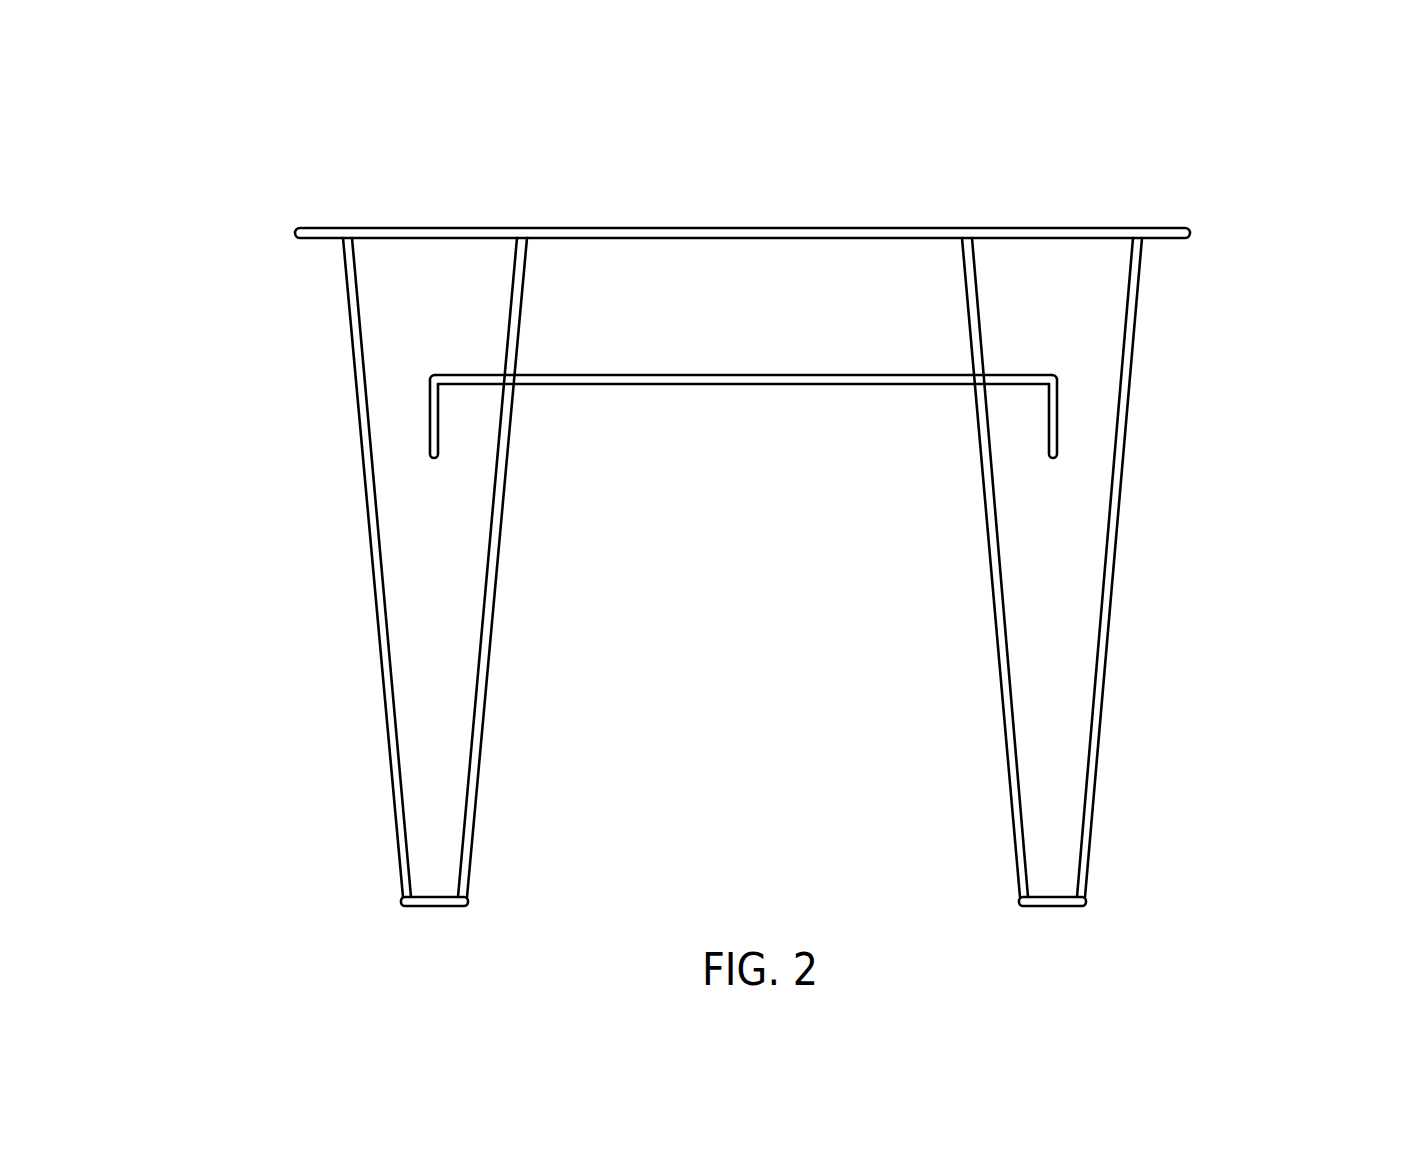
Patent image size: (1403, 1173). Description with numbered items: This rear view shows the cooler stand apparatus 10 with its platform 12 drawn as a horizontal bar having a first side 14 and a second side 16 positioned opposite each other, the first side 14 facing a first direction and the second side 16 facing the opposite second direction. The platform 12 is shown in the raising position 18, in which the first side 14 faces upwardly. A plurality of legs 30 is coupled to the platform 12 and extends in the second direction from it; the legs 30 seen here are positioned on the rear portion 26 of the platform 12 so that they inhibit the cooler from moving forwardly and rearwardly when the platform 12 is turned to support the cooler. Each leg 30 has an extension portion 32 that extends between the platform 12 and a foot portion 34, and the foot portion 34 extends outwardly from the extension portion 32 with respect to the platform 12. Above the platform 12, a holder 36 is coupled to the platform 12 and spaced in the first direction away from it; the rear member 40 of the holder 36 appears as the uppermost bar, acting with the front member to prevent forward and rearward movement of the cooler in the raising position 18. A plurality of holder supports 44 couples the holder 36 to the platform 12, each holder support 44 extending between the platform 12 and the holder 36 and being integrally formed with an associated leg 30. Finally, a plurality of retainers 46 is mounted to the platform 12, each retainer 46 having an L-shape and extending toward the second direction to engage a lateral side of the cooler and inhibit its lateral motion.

The cooler stand apparatus 10 is at (1150, 158).
The platform 12 is at (593, 413).
The first side 14 is at (720, 375).
The second side 16 is at (743, 384).
The raising position 18 is at (888, 413).
The rear portion 26 is at (868, 378).
The leg 30 is at (328, 657).
The extension portion 32 is at (480, 765).
The foot portion 34 is at (432, 906).
The holder 36 is at (1215, 213).
The rear member 40 is at (768, 228).
The holder support 44 is at (512, 313).
The retainer 46 is at (430, 413).